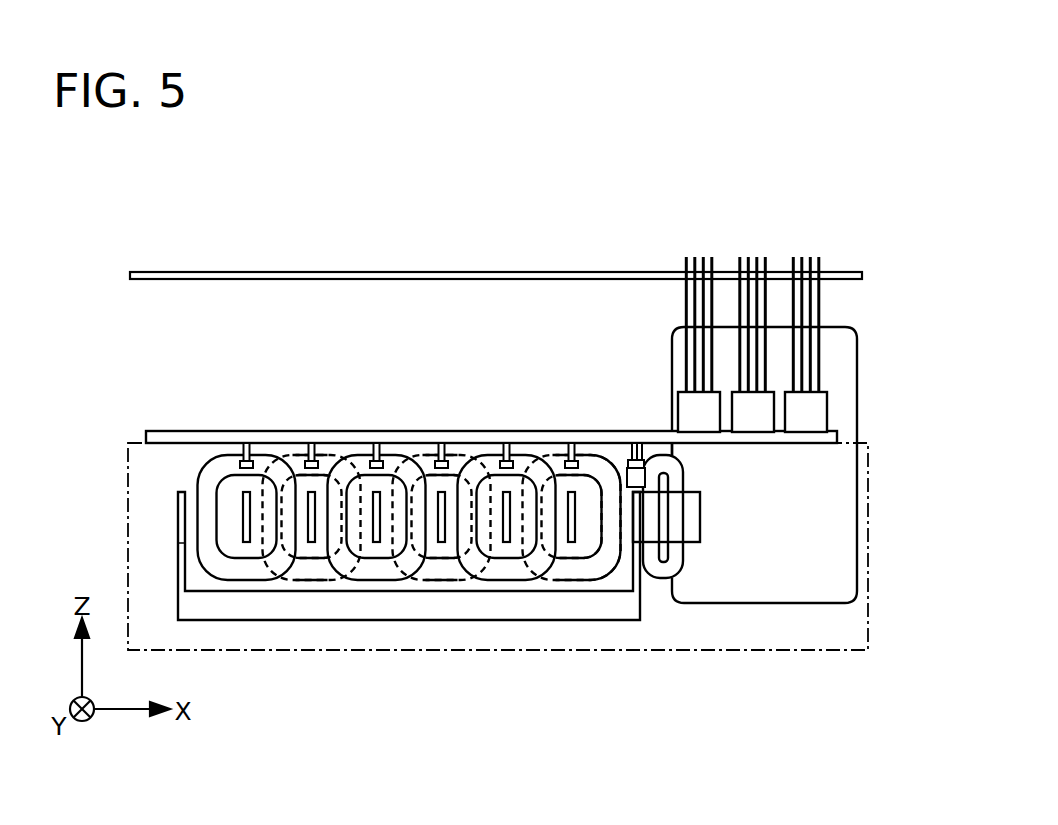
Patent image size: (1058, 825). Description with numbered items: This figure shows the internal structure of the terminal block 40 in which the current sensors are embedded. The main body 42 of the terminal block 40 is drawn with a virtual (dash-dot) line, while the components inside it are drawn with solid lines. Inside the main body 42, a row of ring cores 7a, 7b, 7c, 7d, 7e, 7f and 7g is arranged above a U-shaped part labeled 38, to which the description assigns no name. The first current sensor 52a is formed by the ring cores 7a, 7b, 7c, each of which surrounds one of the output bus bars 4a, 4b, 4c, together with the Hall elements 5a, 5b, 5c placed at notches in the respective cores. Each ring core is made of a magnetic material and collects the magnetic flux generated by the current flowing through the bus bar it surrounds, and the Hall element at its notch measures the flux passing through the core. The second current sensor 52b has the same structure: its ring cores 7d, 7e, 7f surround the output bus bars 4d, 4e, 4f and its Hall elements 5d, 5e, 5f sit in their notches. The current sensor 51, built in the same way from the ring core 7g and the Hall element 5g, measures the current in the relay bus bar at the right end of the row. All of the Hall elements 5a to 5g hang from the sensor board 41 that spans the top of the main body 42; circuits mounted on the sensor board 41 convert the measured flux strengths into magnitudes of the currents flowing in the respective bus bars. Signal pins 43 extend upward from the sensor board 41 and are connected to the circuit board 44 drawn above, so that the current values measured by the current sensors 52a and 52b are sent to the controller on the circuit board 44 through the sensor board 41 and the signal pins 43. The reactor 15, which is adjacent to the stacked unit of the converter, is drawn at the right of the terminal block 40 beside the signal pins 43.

The reactor 15 is at (857, 368).
The holding member 38 is at (177, 517).
The terminal block 40 is at (127, 427).
The sensor board 41 is at (162, 430).
The main body 42 is at (147, 492).
The signal pins 43 is at (682, 250).
The circuit board 44 is at (207, 280).
The output bus bar 4a is at (246, 543).
The output bus bar 4b is at (312, 543).
The output bus bar 4c is at (376, 543).
The output bus bar 4d is at (442, 543).
The output bus bar 4e is at (506, 543).
The output bus bar 4f is at (572, 543).
The Hall element 5a is at (243, 460).
The Hall element 5b is at (308, 460).
The Hall element 5c is at (373, 460).
The Hall element 5d is at (438, 460).
The Hall element 5e is at (503, 460).
The Hall element 5f is at (568, 460).
The Hall element 5g is at (633, 458).
The current sensor 51 is at (646, 428).
The current sensor 52a is at (375, 372).
The current sensor 52b is at (570, 372).
The ring core 7a is at (233, 572).
The ring core 7b is at (298, 572).
The ring core 7c is at (363, 572).
The ring core 7d is at (428, 572).
The ring core 7e is at (493, 572).
The ring core 7f is at (558, 572).
The ring core 7g is at (678, 552).